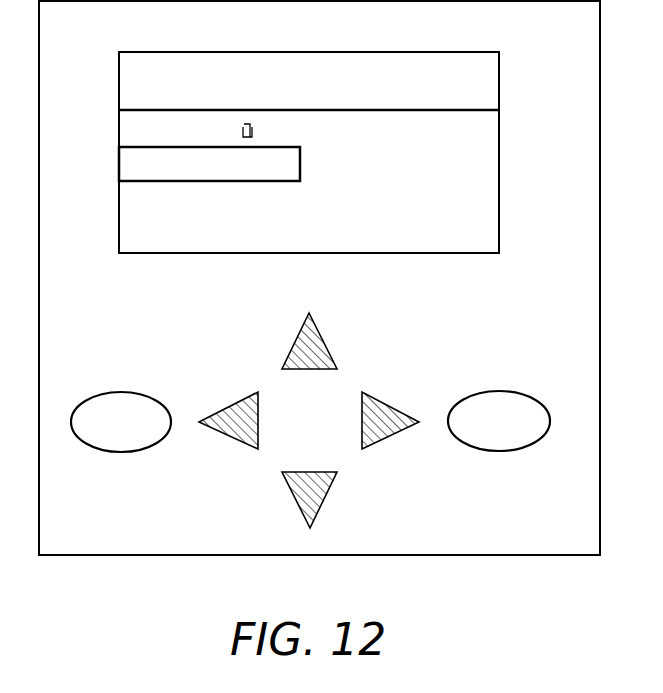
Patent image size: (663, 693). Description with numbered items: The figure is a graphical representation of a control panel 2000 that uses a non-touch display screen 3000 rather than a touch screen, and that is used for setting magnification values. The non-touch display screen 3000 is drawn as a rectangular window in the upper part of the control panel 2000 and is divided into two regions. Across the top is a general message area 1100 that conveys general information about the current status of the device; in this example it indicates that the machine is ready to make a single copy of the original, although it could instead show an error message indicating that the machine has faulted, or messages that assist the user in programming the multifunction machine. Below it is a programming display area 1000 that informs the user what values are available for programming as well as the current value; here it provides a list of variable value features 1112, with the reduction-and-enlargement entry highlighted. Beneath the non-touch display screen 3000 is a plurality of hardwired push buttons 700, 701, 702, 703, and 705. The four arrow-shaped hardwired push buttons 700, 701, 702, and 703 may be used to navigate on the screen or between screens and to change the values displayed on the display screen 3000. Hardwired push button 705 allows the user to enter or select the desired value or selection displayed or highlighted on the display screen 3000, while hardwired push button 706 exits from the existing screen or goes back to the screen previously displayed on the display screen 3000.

The control panel 2000 is at (482, 556).
The programming display area 1000 is at (468, 182).
The general message area 1100 is at (466, 97).
The non-touch display screen 3000 is at (427, 253).
The variable value features 1112 is at (119, 160).
The hardwired push button 700 is at (388, 407).
The hardwired push button 701 is at (294, 345).
The hardwired push button 702 is at (233, 402).
The hardwired push button 703 is at (337, 492).
The hardwired push button 705 is at (119, 392).
The hardwired push button 706 is at (500, 391).